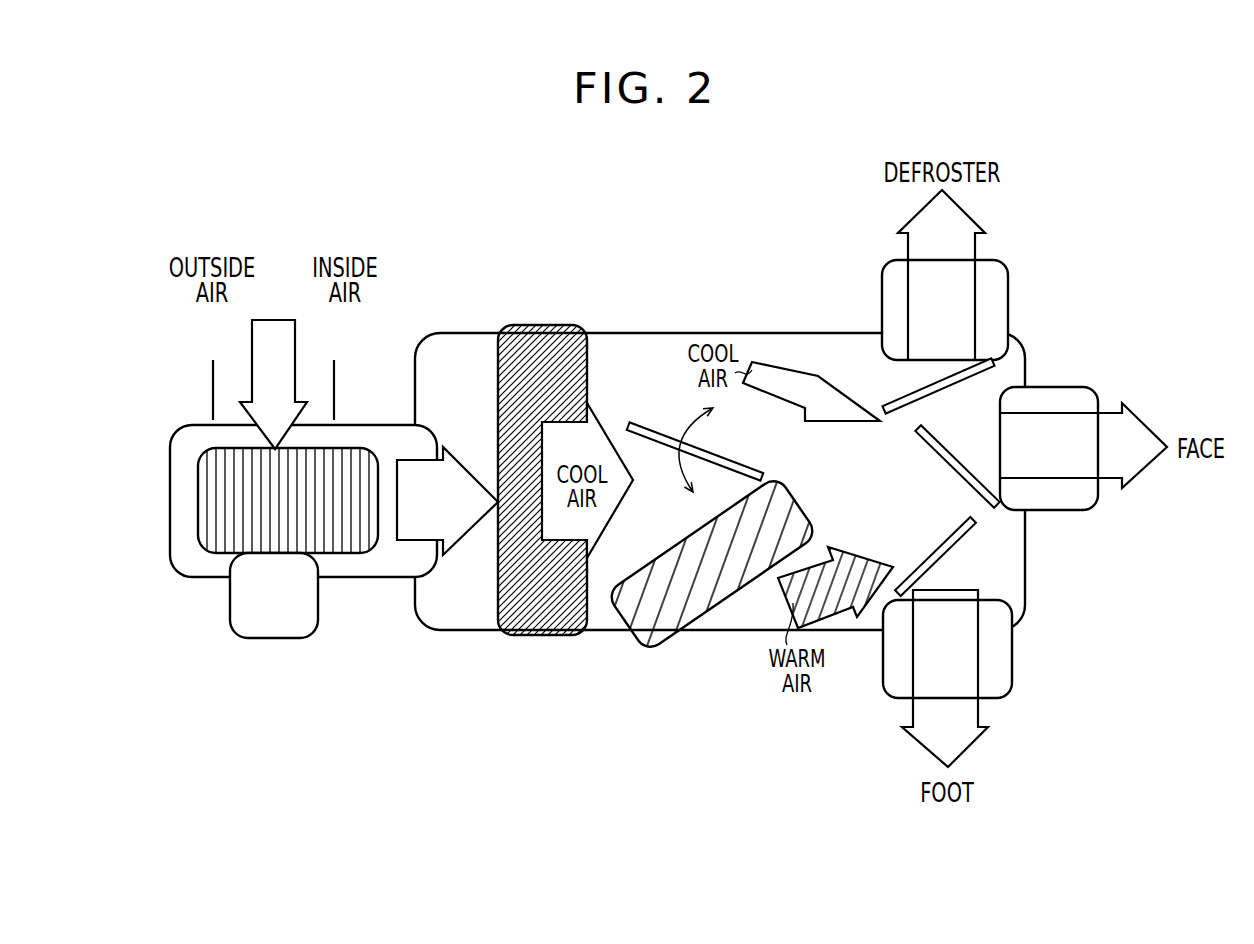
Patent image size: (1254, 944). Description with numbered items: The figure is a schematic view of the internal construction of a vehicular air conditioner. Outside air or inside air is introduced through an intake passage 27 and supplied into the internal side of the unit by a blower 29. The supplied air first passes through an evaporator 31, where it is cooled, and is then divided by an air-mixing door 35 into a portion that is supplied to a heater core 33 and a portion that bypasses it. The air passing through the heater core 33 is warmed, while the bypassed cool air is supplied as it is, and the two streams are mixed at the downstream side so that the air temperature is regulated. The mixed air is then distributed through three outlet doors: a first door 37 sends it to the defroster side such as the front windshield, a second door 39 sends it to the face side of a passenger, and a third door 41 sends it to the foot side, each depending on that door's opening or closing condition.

The intake passage 27 is at (225, 385).
The blower 29 is at (222, 532).
The evaporator 31 is at (540, 637).
The heater core 33 is at (725, 602).
The air-mixing door 35 is at (647, 420).
The first door 37 is at (897, 395).
The second door 39 is at (946, 447).
The third door 41 is at (933, 540).